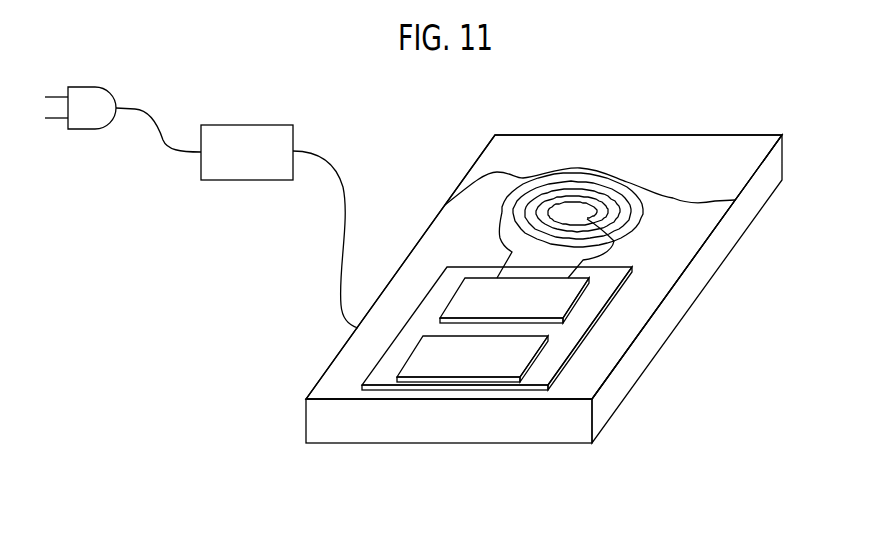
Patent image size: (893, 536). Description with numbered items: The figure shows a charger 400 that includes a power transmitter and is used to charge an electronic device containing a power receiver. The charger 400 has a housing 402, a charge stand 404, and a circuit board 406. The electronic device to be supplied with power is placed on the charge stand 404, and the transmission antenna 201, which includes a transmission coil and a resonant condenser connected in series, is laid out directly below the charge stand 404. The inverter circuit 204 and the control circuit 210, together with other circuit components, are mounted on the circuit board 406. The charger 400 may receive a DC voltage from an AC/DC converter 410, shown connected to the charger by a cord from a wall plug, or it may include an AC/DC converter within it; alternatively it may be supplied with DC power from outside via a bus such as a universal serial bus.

The charger 400 is at (467, 428).
The housing 402 is at (773, 167).
The charge stand 404 is at (530, 164).
The transmission antenna 201 is at (640, 217).
The circuit board 406 is at (610, 280).
The inverter circuit 204 is at (556, 308).
The control circuit 210 is at (543, 352).
The AC/DC converter 410 is at (247, 182).